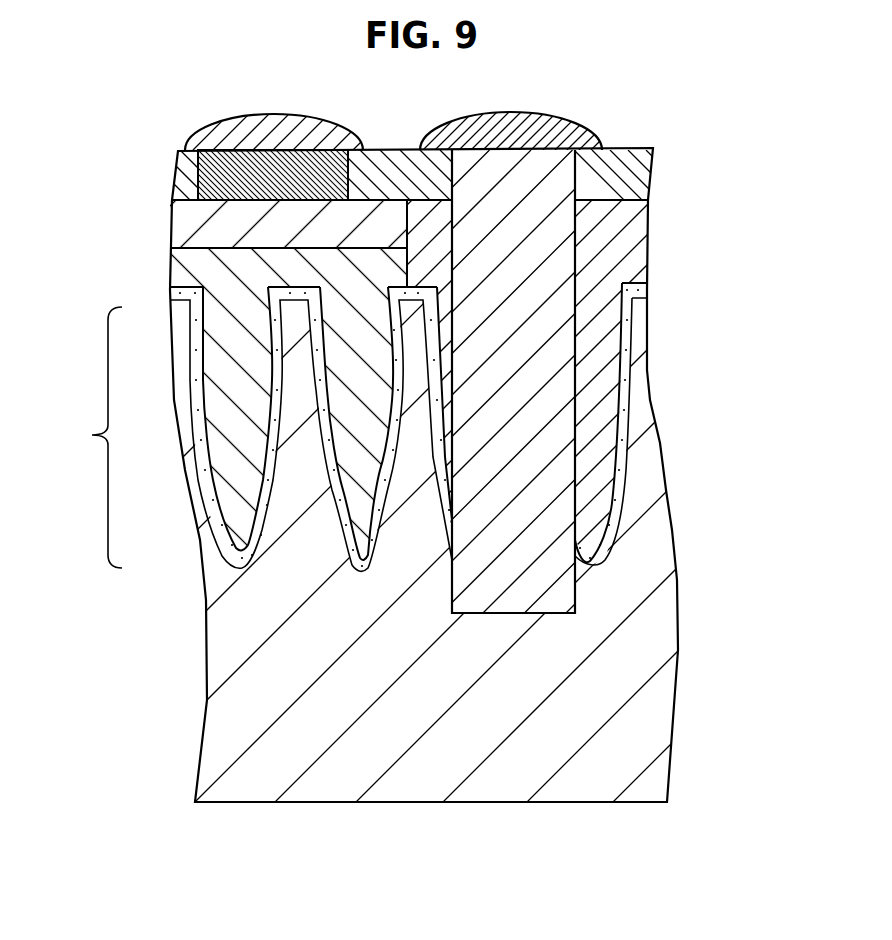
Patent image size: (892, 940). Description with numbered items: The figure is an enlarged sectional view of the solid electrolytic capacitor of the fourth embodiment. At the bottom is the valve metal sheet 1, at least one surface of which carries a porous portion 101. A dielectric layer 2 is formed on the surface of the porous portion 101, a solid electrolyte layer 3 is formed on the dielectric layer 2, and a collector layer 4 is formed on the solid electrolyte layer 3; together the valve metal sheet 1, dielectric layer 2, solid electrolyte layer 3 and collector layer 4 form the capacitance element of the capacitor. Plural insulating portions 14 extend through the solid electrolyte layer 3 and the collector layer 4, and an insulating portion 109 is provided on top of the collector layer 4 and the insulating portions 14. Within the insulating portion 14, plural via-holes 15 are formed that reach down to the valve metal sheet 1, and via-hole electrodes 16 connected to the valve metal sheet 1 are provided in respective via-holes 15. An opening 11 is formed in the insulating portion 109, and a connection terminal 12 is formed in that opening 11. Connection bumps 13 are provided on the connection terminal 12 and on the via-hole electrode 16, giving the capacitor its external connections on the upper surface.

The valve metal sheet 1 is at (223, 635).
The dielectric layer 2 is at (200, 397).
The solid electrolyte layer 3 is at (225, 318).
The collector layer 4 is at (192, 227).
The opening 11 is at (262, 190).
The connection terminal 12 is at (320, 163).
The connection bumps 13 is at (538, 128).
The insulating portions 14 is at (630, 230).
The via-holes 15 is at (577, 330).
The via-hole electrodes 16 is at (562, 423).
The porous portion 101 is at (80, 437).
The insulating portion 109 is at (633, 168).